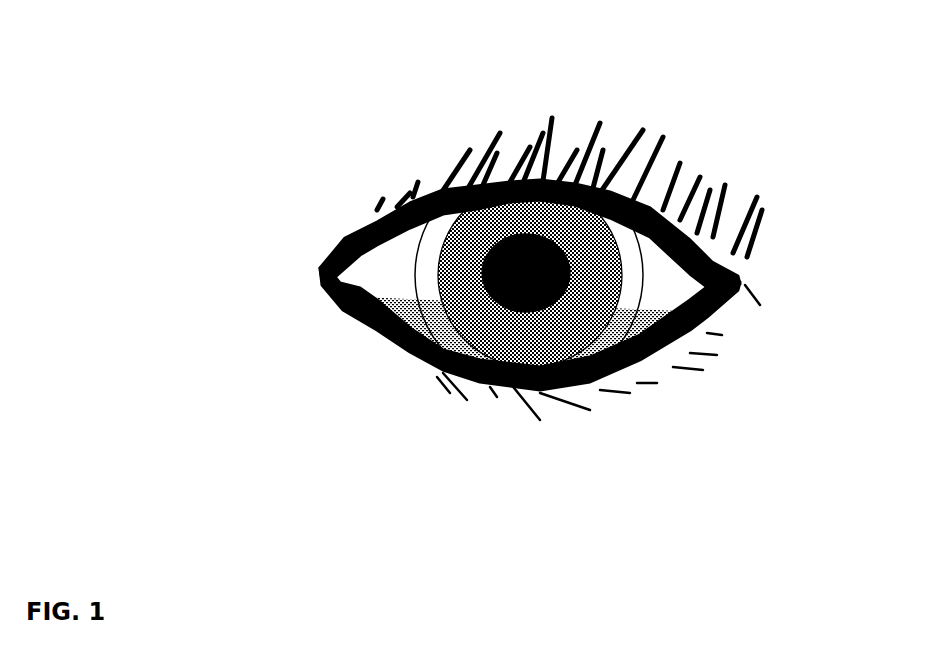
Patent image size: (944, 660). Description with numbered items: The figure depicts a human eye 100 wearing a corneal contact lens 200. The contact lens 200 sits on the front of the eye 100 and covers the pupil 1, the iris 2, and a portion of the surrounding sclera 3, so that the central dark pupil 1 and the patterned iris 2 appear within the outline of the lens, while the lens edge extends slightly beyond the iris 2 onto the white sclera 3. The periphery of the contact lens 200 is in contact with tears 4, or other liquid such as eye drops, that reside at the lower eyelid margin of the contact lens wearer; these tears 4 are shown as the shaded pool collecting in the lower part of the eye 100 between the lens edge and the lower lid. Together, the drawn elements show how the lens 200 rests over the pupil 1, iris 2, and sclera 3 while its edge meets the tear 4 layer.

The human eye 100 is at (366, 190).
The pupil 1 is at (572, 302).
The iris 2 is at (455, 282).
The sclera 3 is at (625, 255).
The tears 4 is at (600, 335).
The corneal contact lens 200 is at (640, 282).